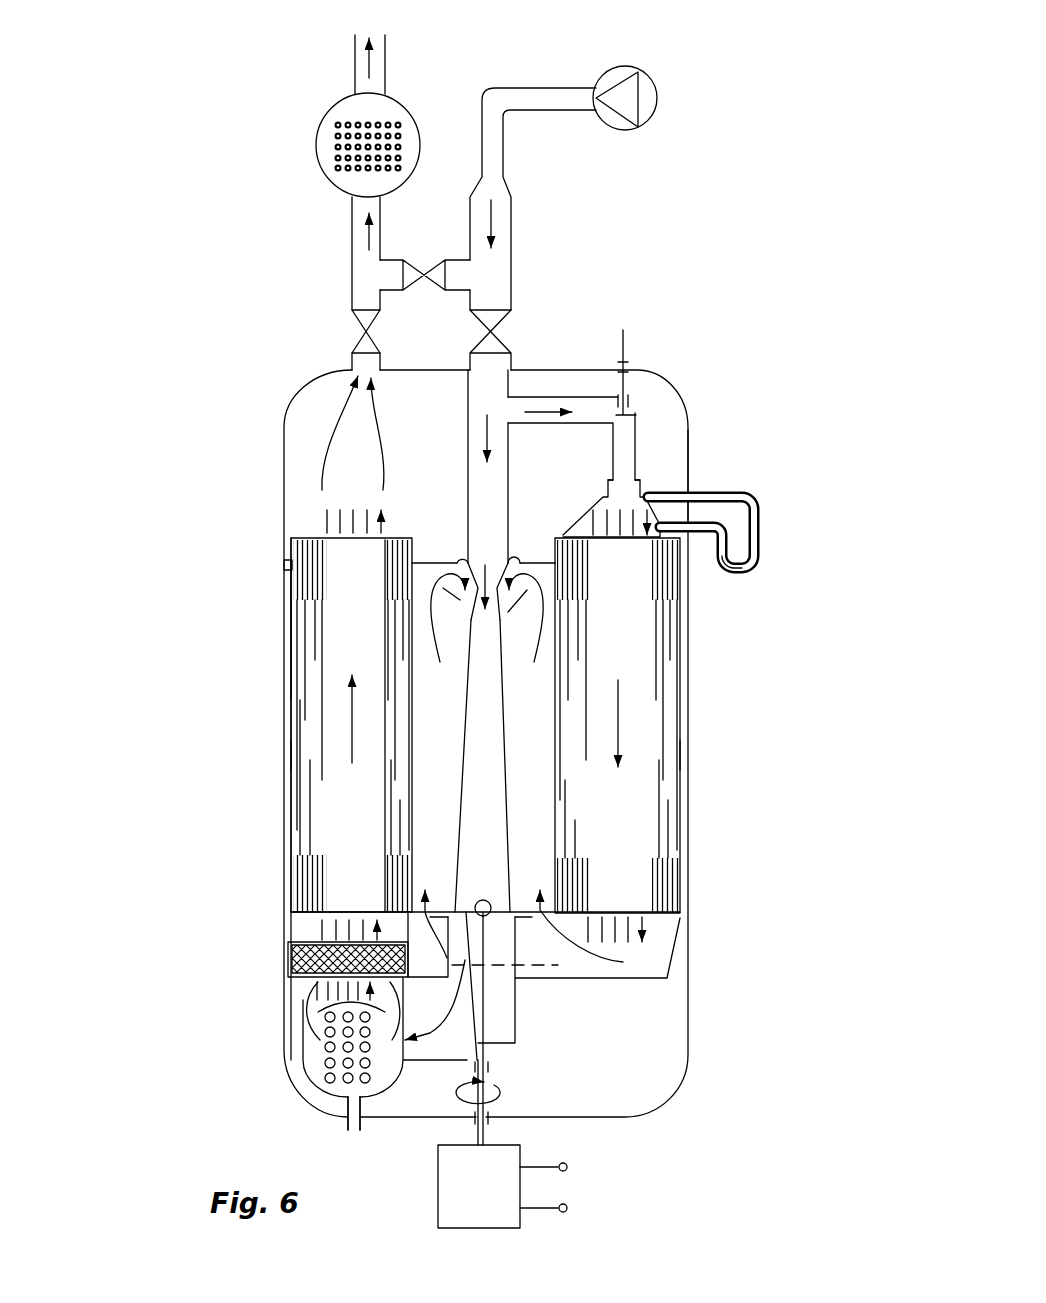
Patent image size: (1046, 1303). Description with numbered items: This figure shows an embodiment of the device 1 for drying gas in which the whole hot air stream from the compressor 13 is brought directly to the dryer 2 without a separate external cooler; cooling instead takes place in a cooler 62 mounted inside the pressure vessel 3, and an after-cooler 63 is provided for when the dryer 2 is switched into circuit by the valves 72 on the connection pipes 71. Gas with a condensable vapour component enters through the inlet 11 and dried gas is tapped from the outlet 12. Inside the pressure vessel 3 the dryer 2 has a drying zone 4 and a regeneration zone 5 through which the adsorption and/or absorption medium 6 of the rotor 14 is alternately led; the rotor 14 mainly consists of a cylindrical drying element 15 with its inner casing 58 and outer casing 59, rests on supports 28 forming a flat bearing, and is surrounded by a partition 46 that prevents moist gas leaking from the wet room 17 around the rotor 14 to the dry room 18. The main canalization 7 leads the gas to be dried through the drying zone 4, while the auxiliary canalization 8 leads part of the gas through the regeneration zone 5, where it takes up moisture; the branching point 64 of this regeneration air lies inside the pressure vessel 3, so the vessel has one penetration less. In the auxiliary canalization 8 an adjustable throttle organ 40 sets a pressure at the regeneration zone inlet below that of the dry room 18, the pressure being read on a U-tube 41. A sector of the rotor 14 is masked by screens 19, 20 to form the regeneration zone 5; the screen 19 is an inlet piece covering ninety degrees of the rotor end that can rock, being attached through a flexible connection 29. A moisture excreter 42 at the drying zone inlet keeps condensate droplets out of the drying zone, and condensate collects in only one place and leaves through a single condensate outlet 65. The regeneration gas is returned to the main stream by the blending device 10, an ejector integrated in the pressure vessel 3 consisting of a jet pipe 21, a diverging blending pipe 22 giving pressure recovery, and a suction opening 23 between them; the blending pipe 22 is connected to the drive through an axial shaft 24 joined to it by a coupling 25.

The device 1 is at (157, 1102).
The dryer 2 is at (281, 358).
The pressure vessel 3 is at (690, 437).
The drying zone 4 is at (327, 677).
The regeneration zone 5 is at (643, 692).
The adsorption and/or absorption medium 6 is at (680, 752).
The main canalization 7 is at (463, 471).
The auxiliary canalization 8 is at (640, 436).
The blending device 10 is at (517, 526).
The inlet 11 is at (524, 90).
The outlet 12 is at (355, 52).
The compressor 13 is at (657, 98).
The rotor 14 is at (290, 640).
The drying element 15 is at (327, 717).
The wet room 17 is at (440, 1052).
The dry room 18 is at (298, 428).
The screen 19 is at (746, 494).
The screen 20 is at (637, 993).
The jet pipe 21 is at (472, 575).
The blending pipe 22 is at (505, 740).
The suction opening 23 is at (458, 598).
The axial shaft 24 is at (517, 1043).
The coupling 25 is at (476, 900).
The supports 28 is at (300, 912).
The flexible connection 29 is at (638, 483).
The adjustable throttle organ 40 is at (637, 403).
The U-tube 41 is at (733, 574).
The moisture excreter 42 is at (288, 958).
The partition 46 is at (284, 564).
The inner casing 58 is at (412, 788).
The outer casing 59 is at (290, 755).
The cooler 62 is at (315, 1040).
The after-cooler 63 is at (320, 128).
The branching point 64 is at (496, 392).
The condensate outlet 65 is at (345, 1123).
The connection pipes 71 is at (395, 260).
The valves 72 is at (355, 320).